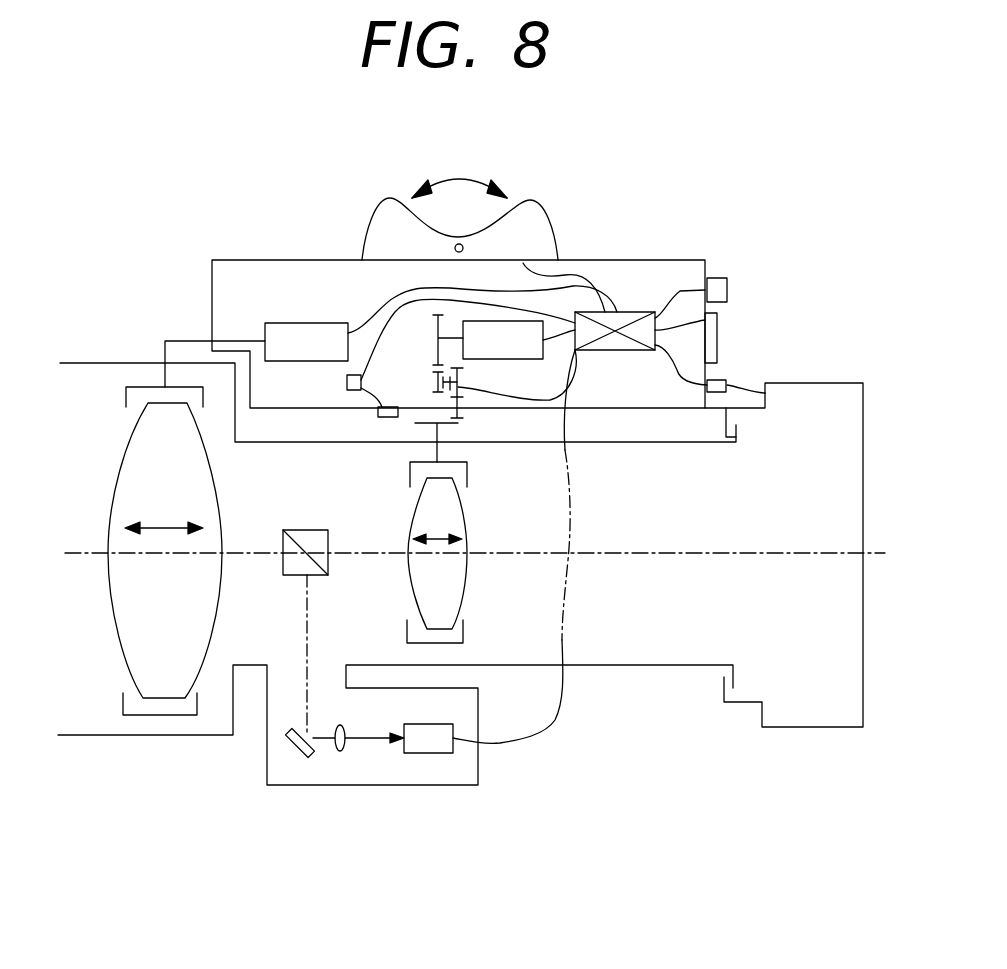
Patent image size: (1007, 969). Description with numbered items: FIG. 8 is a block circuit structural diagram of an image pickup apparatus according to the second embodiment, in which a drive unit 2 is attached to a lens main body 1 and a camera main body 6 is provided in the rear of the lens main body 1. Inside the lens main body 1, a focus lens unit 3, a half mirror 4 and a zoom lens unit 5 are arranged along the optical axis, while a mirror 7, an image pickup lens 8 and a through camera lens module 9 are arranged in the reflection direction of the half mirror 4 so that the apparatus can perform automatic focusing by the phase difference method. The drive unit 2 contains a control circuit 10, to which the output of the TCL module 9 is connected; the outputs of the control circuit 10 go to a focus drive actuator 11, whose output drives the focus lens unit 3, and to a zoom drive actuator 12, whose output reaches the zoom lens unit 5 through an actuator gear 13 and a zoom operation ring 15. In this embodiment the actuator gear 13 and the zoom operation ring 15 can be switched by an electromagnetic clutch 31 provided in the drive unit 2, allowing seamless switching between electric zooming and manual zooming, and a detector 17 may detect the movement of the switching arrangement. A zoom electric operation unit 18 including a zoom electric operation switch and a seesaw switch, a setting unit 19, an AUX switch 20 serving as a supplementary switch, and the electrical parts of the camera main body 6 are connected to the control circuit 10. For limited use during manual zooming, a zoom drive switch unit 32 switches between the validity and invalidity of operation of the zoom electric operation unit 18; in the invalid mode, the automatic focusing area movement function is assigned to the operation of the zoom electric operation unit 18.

The lens main body 1 is at (95, 371).
The drive unit 2 is at (230, 270).
The focus lens unit 3 is at (155, 413).
The half mirror 4 is at (297, 530).
The zoom lens unit 5 is at (450, 603).
The camera main body 6 is at (847, 387).
The mirror 7 is at (298, 755).
The image pickup lens 8 is at (343, 752).
The through camera lens (TCL) module 9 is at (445, 755).
The control circuit 10 is at (627, 317).
The focus drive actuator 11 is at (288, 327).
The zoom drive actuator 12 is at (532, 327).
The actuator gear 13 is at (437, 330).
The zoom operation ring 15 is at (457, 425).
The detector 17 is at (347, 383).
The zoom electric operation unit 18 is at (383, 222).
The setting unit 19 is at (720, 317).
The AUX switch 20 is at (717, 277).
The electromagnetic clutch 31 is at (443, 397).
The zoom drive switch unit 32 is at (383, 417).